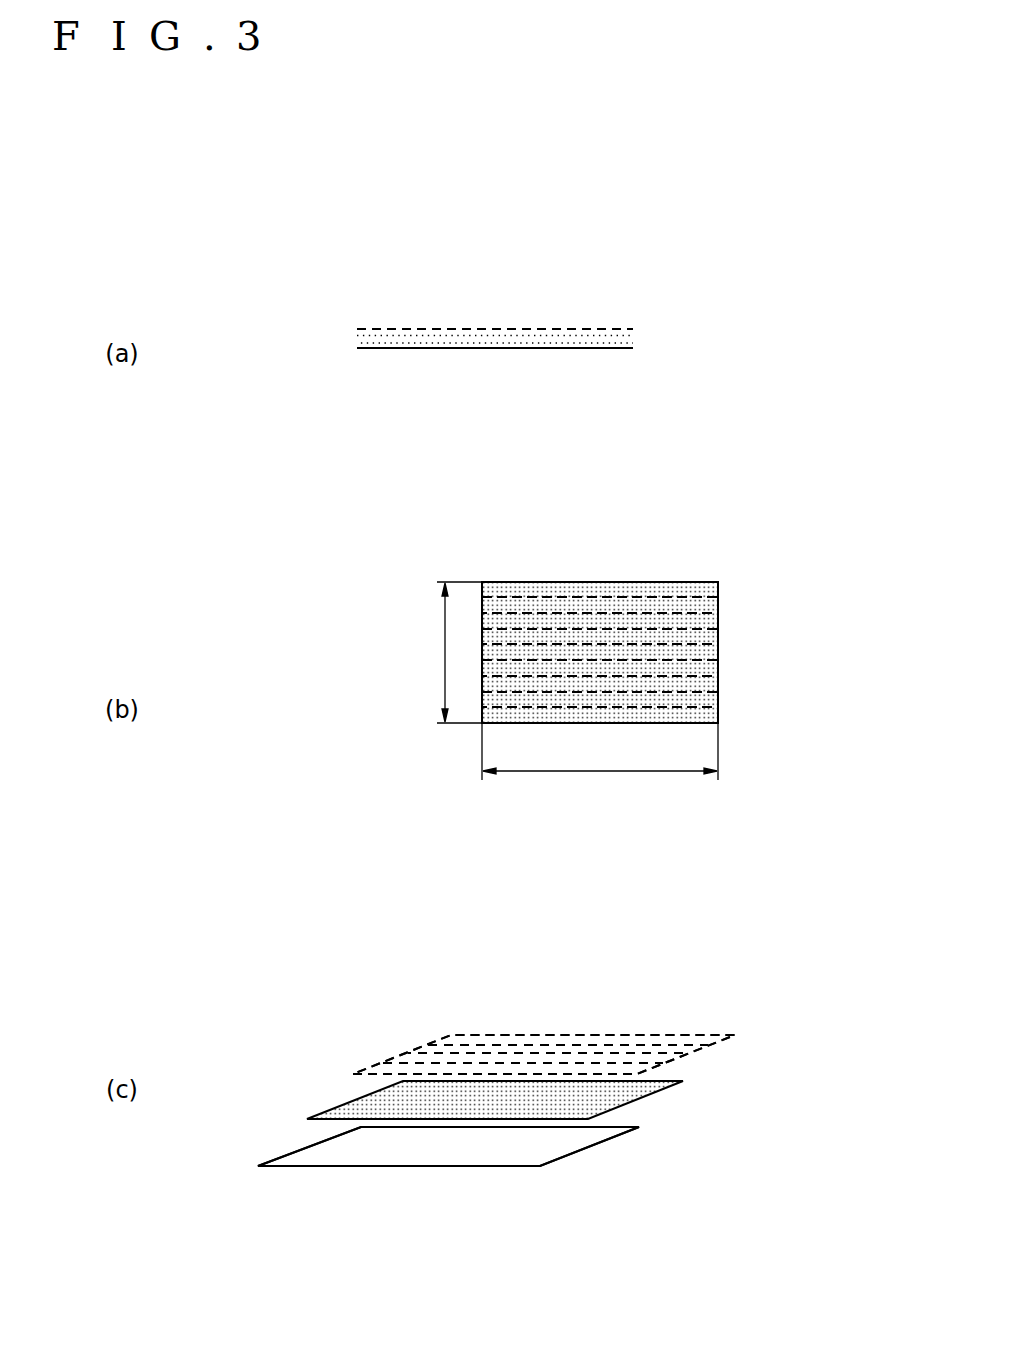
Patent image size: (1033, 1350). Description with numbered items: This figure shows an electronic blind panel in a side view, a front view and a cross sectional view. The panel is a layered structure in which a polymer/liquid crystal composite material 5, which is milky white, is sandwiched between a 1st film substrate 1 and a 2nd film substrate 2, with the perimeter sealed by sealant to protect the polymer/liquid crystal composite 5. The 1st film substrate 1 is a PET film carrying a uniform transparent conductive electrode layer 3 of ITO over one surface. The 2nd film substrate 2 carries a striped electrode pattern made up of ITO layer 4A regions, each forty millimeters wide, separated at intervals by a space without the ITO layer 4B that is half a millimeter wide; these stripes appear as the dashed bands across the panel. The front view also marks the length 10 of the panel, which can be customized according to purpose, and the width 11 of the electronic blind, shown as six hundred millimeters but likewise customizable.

The 1st film substrate 1 is at (494, 349).
The 2nd film substrate 2 is at (596, 329).
The transparent conductive electrode layer 3 is at (553, 1148).
The polymer/liquid crystal composite material 5 is at (407, 342).
The ITO layer 4A is at (695, 653).
The space without the ITO layer 4B is at (710, 592).
The length of the electronic blind panel 10 is at (443, 652).
The width of the electronic blind 11 is at (600, 771).